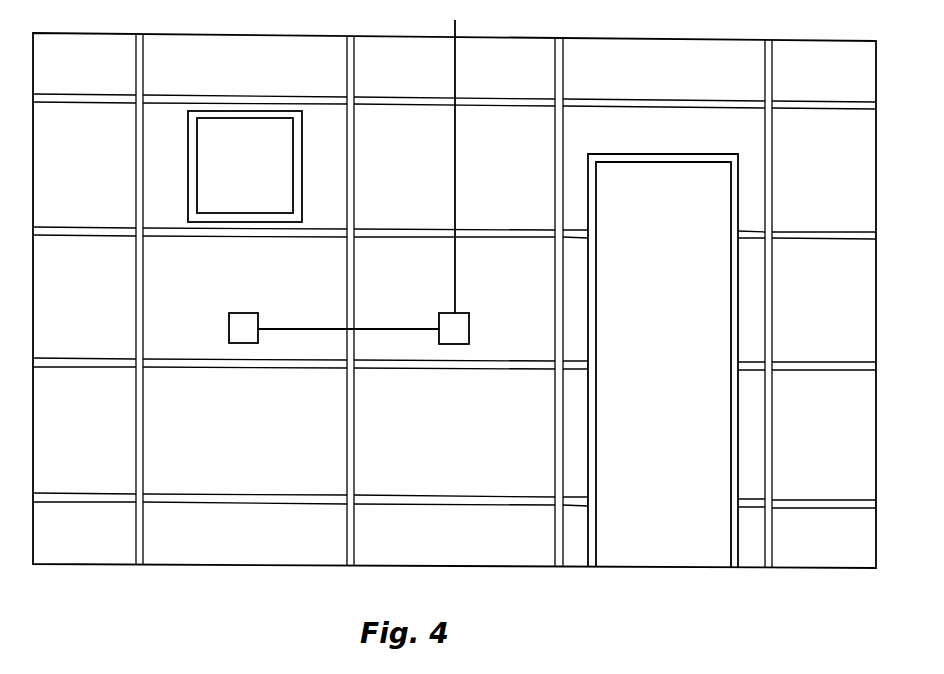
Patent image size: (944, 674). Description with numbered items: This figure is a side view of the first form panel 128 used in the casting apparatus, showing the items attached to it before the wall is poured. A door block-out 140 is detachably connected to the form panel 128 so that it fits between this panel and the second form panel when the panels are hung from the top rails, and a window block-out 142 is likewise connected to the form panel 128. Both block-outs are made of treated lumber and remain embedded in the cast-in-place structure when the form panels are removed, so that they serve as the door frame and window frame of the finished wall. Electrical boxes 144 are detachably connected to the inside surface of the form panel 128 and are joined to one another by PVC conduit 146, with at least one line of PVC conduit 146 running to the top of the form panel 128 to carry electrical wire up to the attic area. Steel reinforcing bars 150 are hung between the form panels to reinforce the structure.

The first form panel 128 is at (100, 566).
The steel reinforcing bars 150 is at (347, 68).
The window block-out 142 is at (192, 166).
The door block-out 140 is at (742, 185).
The PVC conduit 146 is at (455, 278).
The electrical boxes 144 is at (245, 333).